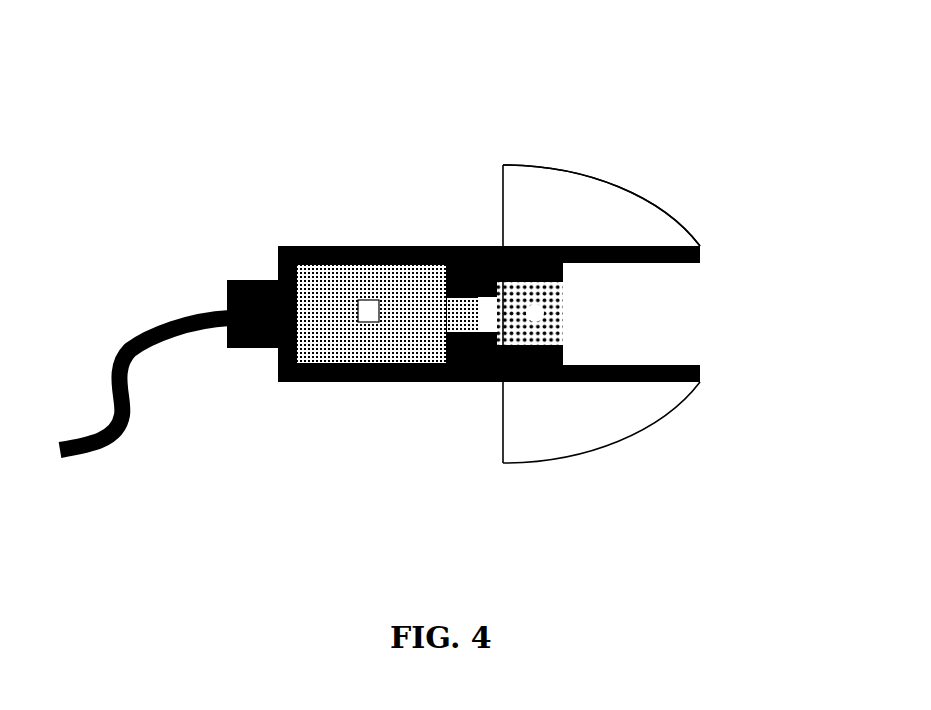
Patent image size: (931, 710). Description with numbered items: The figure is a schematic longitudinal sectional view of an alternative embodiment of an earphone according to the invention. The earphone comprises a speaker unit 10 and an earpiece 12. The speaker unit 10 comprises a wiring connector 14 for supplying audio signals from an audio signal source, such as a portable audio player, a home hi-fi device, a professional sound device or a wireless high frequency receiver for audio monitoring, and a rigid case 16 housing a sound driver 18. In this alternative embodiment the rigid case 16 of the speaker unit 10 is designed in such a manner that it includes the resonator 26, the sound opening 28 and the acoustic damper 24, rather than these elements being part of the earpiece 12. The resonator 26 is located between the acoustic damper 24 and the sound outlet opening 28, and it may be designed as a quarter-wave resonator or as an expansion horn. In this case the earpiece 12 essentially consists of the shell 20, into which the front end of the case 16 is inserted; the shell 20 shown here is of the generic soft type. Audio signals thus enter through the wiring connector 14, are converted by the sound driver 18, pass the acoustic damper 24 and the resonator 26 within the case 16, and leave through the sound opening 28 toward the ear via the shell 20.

The speaker unit 10 is at (439, 324).
The earpiece 12 is at (645, 177).
The wiring connector 14 is at (235, 280).
The rigid case 16 is at (465, 248).
The sound driver 18 is at (348, 287).
The shell 20 is at (627, 420).
The acoustic damper 24 is at (520, 303).
The resonator 26 is at (652, 292).
The sound outlet opening 28 is at (707, 295).